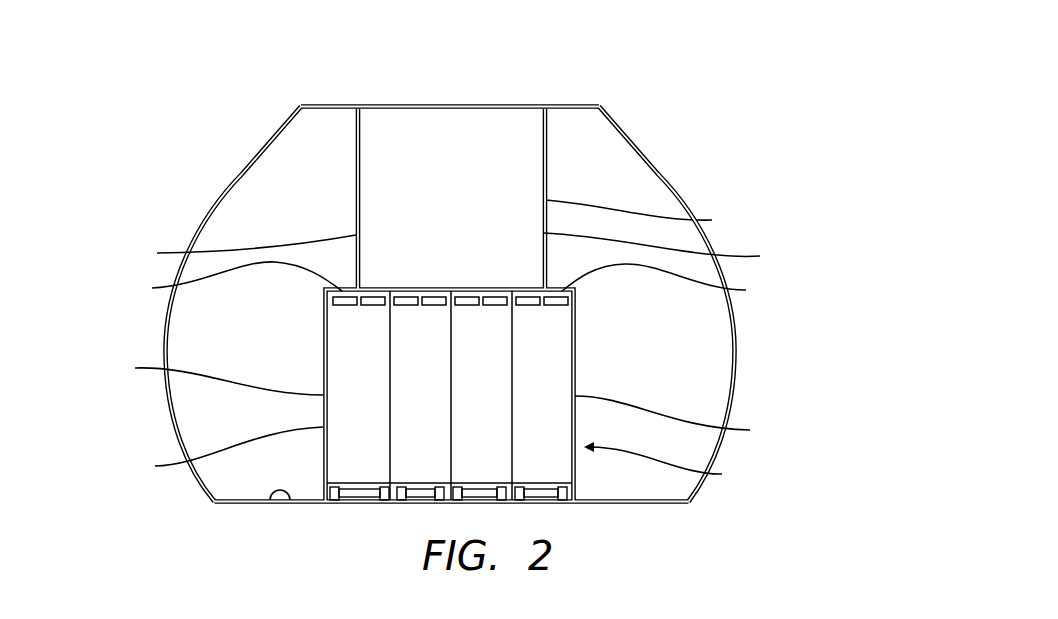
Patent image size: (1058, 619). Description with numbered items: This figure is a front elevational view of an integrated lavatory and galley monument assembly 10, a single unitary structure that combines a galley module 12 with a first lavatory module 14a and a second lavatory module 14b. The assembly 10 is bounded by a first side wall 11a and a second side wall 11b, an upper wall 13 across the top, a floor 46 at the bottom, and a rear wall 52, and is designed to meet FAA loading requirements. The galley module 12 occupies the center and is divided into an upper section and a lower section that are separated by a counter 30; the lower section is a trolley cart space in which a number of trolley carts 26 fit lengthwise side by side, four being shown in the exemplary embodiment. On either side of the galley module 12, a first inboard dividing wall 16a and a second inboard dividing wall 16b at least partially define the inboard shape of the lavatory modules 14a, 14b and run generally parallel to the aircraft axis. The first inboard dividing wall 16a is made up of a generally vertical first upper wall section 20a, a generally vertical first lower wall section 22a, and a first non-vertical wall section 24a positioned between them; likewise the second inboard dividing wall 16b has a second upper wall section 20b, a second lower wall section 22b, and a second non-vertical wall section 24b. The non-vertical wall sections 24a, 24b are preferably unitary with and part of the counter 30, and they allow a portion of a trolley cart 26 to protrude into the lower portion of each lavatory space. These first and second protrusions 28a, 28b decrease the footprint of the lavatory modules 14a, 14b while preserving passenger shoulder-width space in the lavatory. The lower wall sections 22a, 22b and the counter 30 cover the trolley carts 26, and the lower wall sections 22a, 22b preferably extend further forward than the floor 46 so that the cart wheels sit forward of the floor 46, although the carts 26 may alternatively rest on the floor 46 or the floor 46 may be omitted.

The integrated lavatory and galley monument assembly 10 is at (468, 263).
The first side wall 11a is at (197, 232).
The second side wall 11b is at (734, 354).
The galley module 12 is at (446, 191).
The upper wall 13 is at (573, 104).
The first lavatory module 14a is at (282, 196).
The second lavatory module 14b is at (595, 175).
The first inboard dividing wall 16a is at (238, 250).
The second inboard dividing wall 16b is at (672, 252).
The first upper wall section 20a is at (355, 167).
The second upper wall section 20b is at (650, 199).
The first lower wall section 22a is at (210, 376).
The second lower wall section 22b is at (684, 419).
The first non-vertical wall section 24a is at (227, 281).
The second non-vertical wall section 24b is at (674, 283).
The trolley cart 26 is at (366, 474).
The first protrusion 28a is at (220, 454).
The second protrusion 28b is at (675, 466).
The counter 30 is at (480, 288).
The floor 46 is at (290, 498).
The rear wall 52 is at (669, 363).